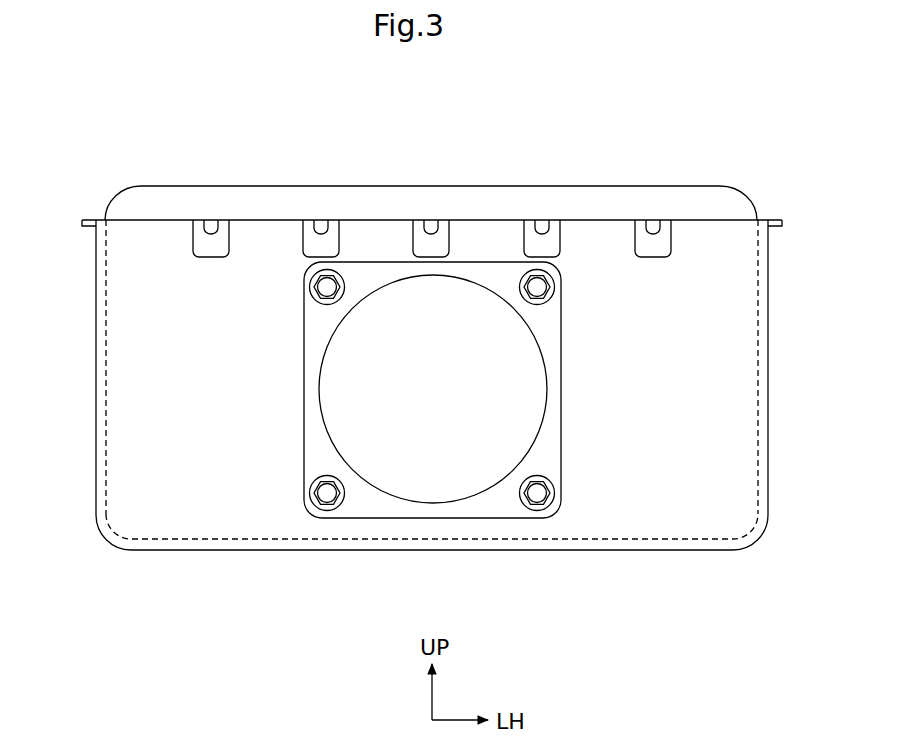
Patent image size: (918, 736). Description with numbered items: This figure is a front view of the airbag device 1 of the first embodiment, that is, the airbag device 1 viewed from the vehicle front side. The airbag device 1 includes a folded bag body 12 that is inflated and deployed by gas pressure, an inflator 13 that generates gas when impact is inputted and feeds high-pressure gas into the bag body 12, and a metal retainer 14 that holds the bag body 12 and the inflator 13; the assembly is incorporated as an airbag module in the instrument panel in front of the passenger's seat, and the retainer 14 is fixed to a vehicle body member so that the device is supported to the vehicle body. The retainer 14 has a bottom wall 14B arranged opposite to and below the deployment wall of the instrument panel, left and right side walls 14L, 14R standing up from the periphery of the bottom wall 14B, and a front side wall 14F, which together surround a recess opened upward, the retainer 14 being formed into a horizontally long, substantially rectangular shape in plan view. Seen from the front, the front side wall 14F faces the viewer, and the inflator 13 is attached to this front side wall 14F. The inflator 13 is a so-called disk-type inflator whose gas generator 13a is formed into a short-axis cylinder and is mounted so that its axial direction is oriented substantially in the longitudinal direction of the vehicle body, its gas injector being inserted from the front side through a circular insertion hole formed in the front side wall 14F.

The airbag device 1 is at (726, 154).
The bag body 12 is at (613, 191).
The inflator 13 is at (503, 516).
The gas generator 13a is at (375, 490).
The retainer 14 is at (771, 360).
The right side wall 14R is at (96, 420).
The left side wall 14L is at (770, 422).
The bottom wall 14B is at (264, 551).
The front side wall 14F is at (676, 483).